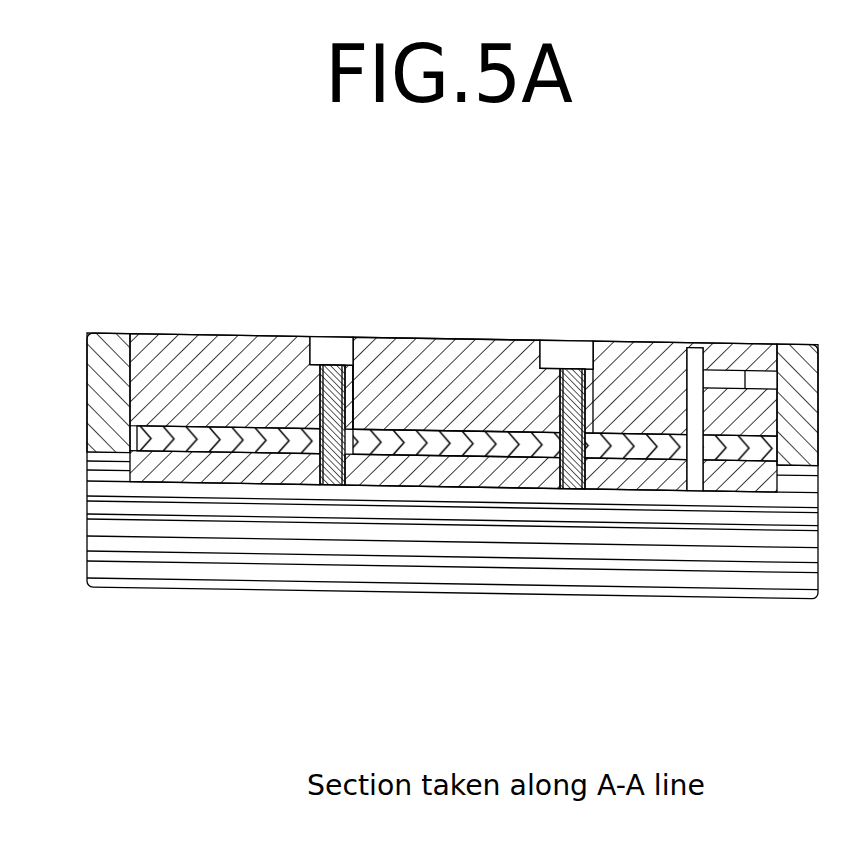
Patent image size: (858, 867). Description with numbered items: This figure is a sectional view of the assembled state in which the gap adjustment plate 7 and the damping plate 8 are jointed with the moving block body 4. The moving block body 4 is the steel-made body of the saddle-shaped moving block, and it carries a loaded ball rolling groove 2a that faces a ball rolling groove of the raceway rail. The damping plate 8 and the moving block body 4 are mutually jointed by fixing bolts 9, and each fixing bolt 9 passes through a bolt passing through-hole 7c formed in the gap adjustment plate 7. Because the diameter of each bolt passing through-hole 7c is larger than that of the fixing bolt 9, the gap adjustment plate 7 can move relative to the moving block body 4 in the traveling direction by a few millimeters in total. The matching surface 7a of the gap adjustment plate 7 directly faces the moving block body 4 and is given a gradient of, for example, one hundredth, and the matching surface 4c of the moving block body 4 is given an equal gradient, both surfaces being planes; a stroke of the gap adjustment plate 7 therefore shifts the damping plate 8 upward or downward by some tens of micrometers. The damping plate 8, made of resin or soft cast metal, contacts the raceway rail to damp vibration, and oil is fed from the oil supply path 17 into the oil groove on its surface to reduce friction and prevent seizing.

The loaded ball rolling groove 2a is at (737, 540).
The moving block body 4 is at (482, 349).
The matching surface 4c is at (520, 423).
The gap adjustment plate 7 is at (482, 477).
The matching surface 7a is at (437, 352).
The bolt passing through-hole 7c is at (351, 411).
The damping plate 8 is at (612, 481).
The fixing bolt 9 is at (325, 481).
The oil supply path 17 is at (700, 401).